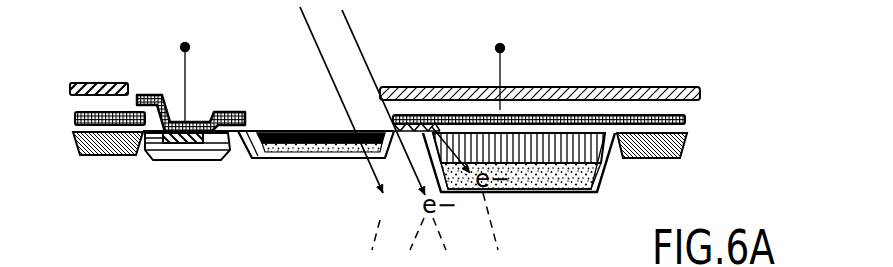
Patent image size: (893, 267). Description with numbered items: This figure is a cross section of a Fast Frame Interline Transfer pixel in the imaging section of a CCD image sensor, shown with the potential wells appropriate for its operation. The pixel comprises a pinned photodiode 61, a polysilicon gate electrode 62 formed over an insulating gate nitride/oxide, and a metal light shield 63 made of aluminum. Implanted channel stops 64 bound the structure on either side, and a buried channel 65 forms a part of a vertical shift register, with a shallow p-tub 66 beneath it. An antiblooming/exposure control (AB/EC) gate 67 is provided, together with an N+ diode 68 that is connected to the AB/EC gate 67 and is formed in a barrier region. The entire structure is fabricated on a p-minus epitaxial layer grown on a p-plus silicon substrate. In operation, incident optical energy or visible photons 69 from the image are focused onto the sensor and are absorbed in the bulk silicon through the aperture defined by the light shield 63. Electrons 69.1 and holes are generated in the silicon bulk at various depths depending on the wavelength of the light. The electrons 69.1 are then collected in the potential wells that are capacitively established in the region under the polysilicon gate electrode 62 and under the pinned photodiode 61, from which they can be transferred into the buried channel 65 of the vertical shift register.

The pinned photodiode 61 is at (253, 152).
The polysilicon gate electrode 62 is at (694, 117).
The metal light shield 63 is at (614, 84).
The implanted channel stops 64 is at (82, 160).
The buried channel 65 is at (610, 163).
The shallow p-tub 66 is at (607, 184).
The antiblooming/exposure control (AB/EC) gate 67 is at (234, 102).
The N+ diode 68 is at (155, 153).
The incident optical energy or visible photons 69 is at (362, 101).
The electrons 69.1 is at (372, 222).